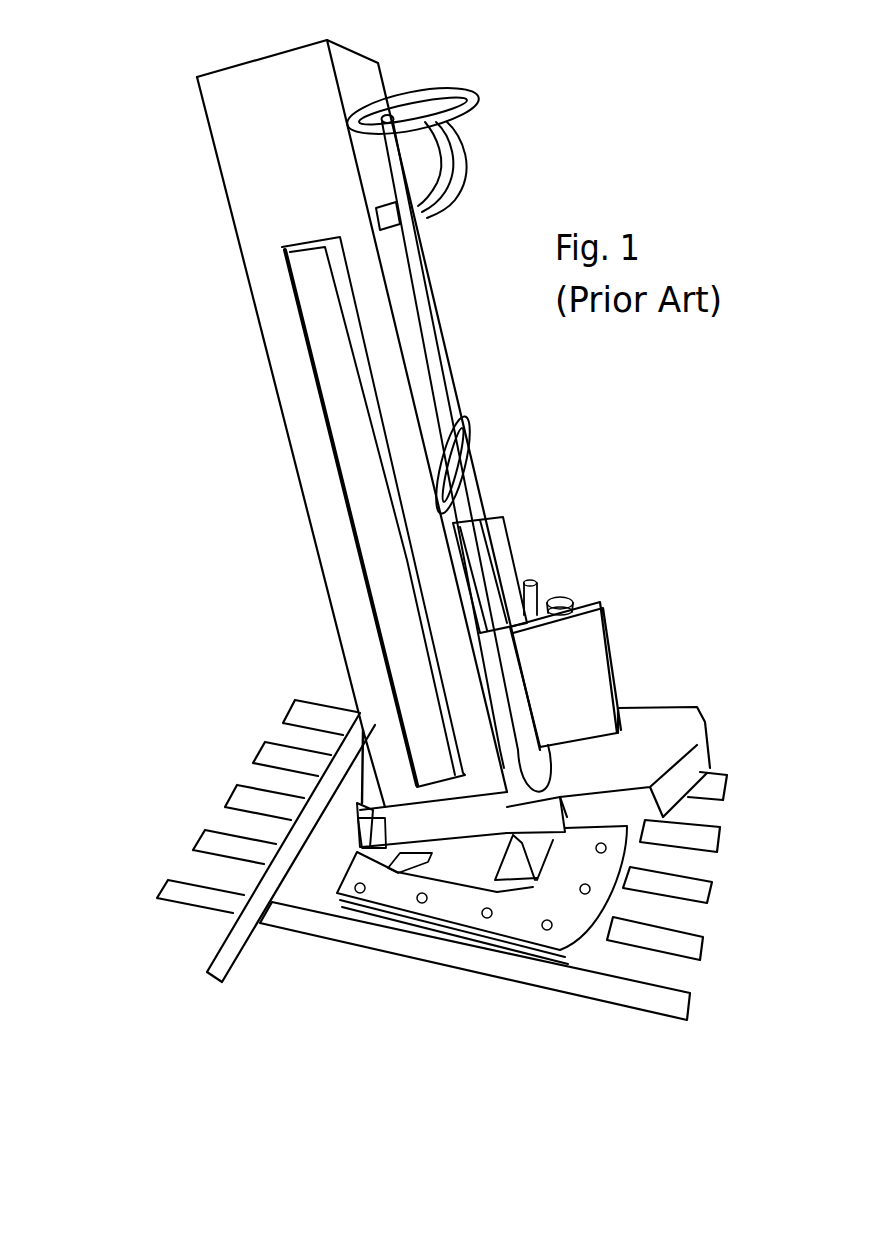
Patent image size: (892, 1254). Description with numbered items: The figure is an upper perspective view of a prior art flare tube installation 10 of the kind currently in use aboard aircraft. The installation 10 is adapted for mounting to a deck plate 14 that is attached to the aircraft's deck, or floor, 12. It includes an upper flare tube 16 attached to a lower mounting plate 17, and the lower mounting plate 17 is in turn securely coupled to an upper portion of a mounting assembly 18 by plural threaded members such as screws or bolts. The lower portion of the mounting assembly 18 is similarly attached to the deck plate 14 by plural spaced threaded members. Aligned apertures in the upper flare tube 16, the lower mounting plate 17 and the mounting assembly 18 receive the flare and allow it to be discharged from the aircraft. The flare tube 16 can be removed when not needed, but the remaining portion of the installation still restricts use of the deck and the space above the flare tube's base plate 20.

The flare tube installation 10 is at (287, 539).
The deck 12 is at (272, 855).
The deck plate 14 is at (310, 893).
The upper flare tube 16 is at (340, 376).
The lower mounting plate 17 is at (657, 742).
The mounting assembly 18 is at (520, 878).
The base plate 20 is at (517, 910).